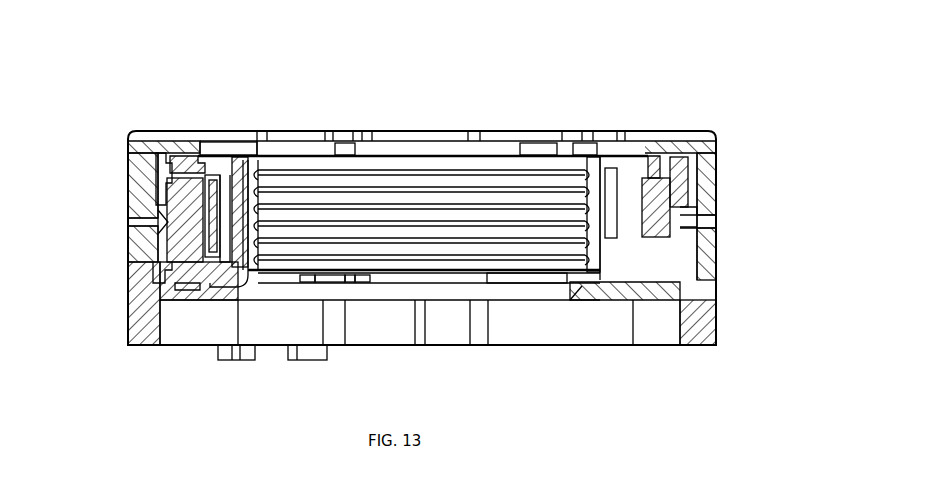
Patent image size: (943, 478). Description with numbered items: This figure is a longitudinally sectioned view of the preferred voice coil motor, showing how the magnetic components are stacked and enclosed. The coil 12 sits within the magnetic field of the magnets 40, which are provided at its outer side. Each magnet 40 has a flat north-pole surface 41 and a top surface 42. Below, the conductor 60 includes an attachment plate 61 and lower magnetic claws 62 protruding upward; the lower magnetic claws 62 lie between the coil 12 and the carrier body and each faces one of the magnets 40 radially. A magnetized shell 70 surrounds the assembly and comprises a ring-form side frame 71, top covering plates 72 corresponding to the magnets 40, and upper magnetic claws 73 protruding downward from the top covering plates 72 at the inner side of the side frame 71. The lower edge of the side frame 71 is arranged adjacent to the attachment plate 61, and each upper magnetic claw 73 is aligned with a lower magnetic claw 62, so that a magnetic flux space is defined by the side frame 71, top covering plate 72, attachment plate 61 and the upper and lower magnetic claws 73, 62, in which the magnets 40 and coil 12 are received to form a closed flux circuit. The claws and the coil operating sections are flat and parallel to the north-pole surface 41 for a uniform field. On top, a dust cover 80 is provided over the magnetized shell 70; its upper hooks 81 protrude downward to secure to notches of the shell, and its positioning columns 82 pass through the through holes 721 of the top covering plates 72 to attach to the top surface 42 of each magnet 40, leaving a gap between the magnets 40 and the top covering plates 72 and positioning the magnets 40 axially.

The coil 12 is at (213, 192).
The magnets 40 is at (190, 250).
The north-pole surface 41 is at (236, 262).
The top surface 42 is at (652, 165).
The conductor 60 is at (206, 262).
The attachment plate 61 is at (190, 270).
The lower magnetic claws 62 is at (262, 258).
The magnetized shell 70 is at (157, 183).
The side frame 71 is at (165, 264).
The top covering plate 72 is at (206, 156).
The upper magnetic claws 73 is at (247, 190).
The dust cover 80 is at (668, 153).
The upper hooks 81 is at (143, 208).
The positioning columns 82 is at (667, 173).
The through holes 721 is at (680, 153).